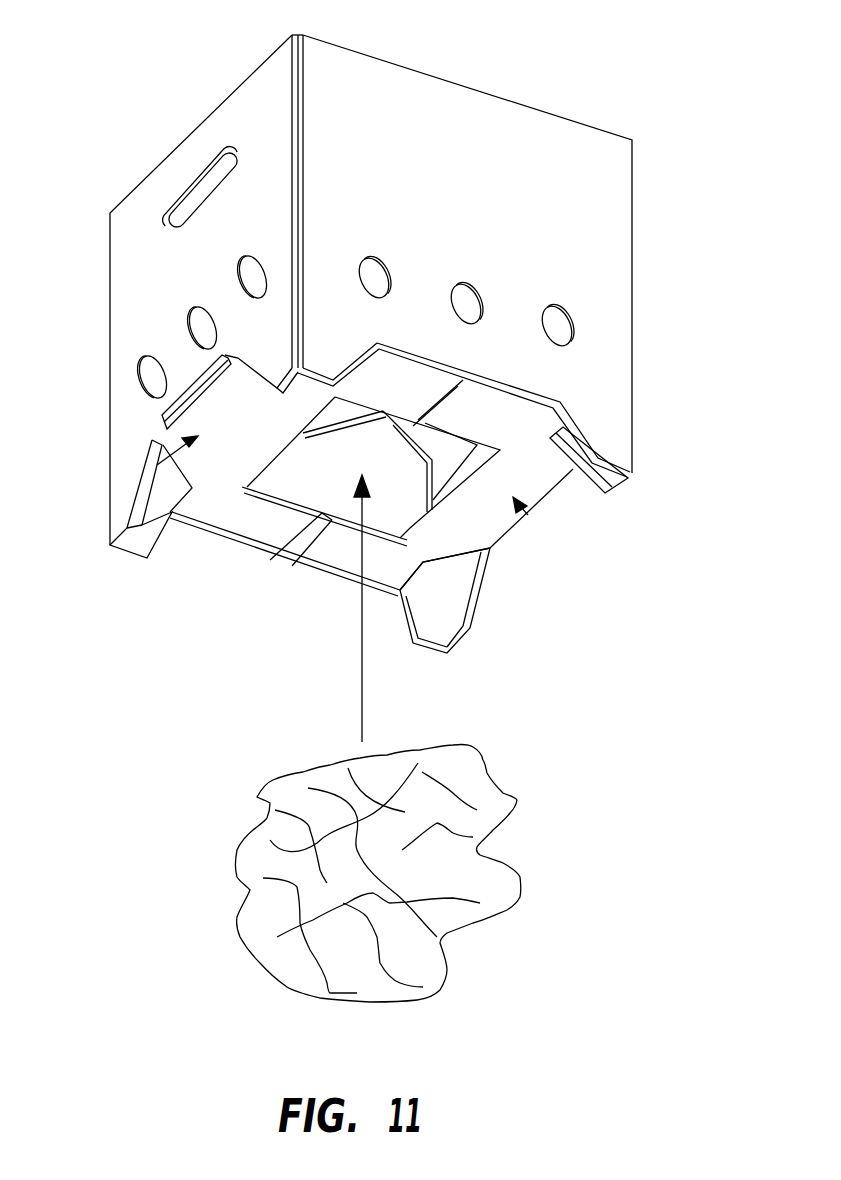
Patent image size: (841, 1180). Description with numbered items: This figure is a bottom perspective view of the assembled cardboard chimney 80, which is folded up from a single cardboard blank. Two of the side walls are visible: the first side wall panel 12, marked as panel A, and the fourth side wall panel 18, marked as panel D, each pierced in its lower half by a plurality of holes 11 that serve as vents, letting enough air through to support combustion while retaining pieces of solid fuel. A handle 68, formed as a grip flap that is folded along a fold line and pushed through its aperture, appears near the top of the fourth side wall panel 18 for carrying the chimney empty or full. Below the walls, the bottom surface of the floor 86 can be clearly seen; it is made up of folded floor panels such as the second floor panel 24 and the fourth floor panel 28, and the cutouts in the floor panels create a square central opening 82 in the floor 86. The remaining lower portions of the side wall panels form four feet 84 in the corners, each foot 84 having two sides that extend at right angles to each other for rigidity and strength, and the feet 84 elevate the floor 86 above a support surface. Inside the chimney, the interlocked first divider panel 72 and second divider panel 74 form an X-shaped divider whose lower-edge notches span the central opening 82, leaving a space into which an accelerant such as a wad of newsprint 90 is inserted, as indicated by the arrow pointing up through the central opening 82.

The assembled cardboard chimney 80 is at (168, 84).
The handle 68 is at (235, 152).
The holes 11 is at (152, 355).
The first side wall panel 12 is at (615, 230).
The fourth side wall panel 18 is at (118, 258).
The feet 84 is at (268, 383).
The floor 86 is at (157, 465).
The second divider panel 74 is at (324, 430).
The first divider panel 72 is at (428, 448).
The fourth floor panel 28 is at (232, 545).
The central opening 82 is at (310, 510).
The second floor panel 24 is at (330, 560).
The wad of newsprint 90 is at (515, 800).